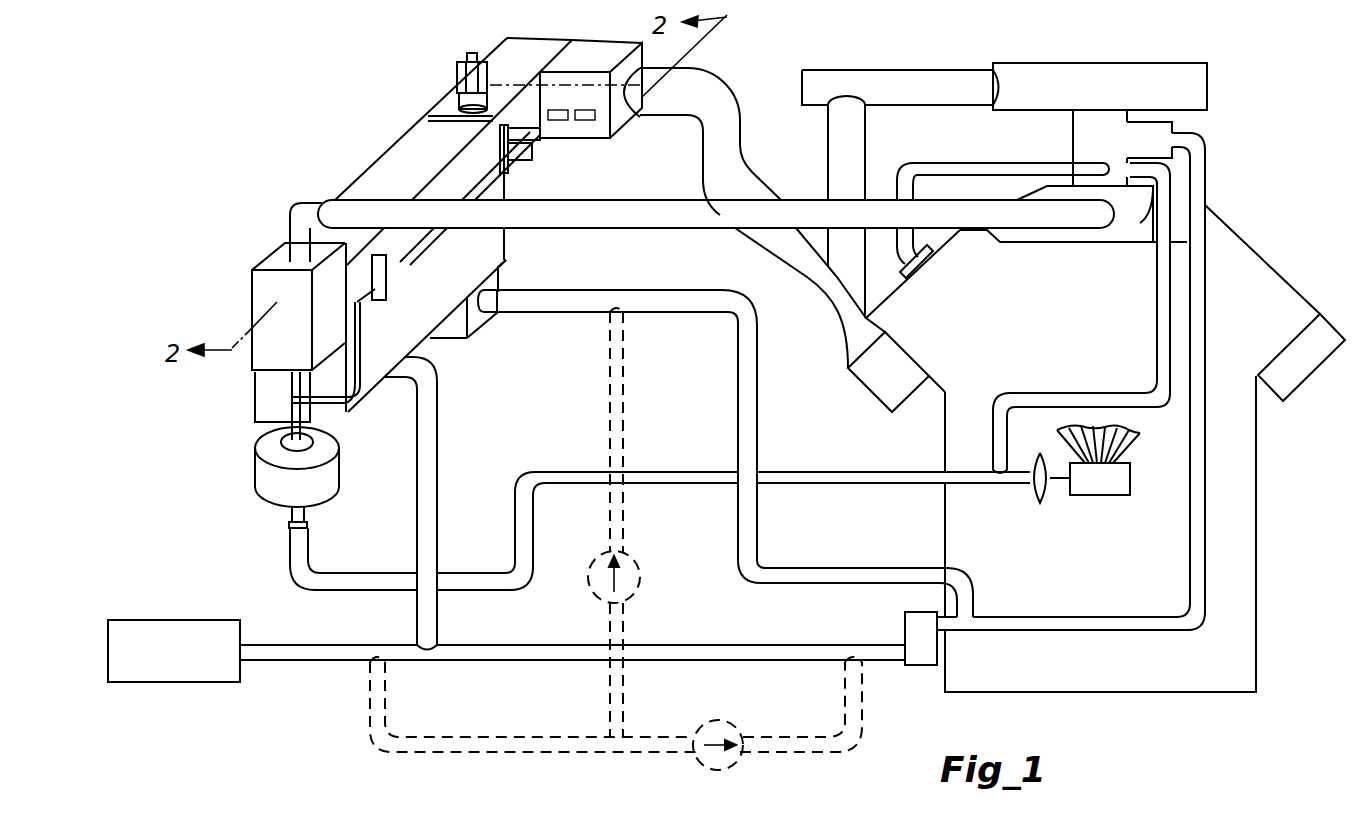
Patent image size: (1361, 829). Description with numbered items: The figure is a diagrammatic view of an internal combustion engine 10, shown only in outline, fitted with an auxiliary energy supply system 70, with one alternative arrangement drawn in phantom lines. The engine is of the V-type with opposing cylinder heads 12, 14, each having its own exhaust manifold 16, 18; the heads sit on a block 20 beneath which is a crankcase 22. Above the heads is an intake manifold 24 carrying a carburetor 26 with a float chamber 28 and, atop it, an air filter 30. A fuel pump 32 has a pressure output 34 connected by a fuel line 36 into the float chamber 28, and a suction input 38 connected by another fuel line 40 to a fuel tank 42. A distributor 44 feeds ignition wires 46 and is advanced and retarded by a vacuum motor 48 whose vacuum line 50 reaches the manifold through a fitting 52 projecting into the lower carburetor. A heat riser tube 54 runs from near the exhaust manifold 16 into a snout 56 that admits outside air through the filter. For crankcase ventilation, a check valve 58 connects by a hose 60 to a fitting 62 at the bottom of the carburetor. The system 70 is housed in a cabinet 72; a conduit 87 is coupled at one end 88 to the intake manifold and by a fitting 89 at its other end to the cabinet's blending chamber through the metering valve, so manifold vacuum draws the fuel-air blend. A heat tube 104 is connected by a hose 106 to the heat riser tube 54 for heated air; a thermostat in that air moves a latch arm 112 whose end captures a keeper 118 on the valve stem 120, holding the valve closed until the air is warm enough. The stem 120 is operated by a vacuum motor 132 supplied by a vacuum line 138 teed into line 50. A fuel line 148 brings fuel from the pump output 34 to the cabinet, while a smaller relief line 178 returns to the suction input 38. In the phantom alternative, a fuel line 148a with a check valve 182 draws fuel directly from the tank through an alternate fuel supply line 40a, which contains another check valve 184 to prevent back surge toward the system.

The internal combustion engine 10 is at (1132, 540).
The cylinder head 12 is at (905, 285).
The cylinder head 14 is at (1298, 285).
The exhaust manifold 16 is at (874, 396).
The exhaust manifold 18 is at (1322, 372).
The block 20 is at (1132, 540).
The crankcase 22 is at (1264, 691).
The intake manifold 24 is at (1210, 204).
The carburetor 26 is at (1073, 133).
The float chamber 28 is at (1178, 135).
The air filter 30 is at (1088, 74).
The fuel pump 32 is at (922, 667).
The pressure output 34 is at (946, 631).
The fuel line 36 is at (1115, 632).
The suction input 38 is at (905, 643).
The fuel line 40 is at (750, 645).
The alternate fuel supply line 40a is at (803, 762).
The fuel tank 42 is at (208, 620).
The distributor 44 is at (1103, 495).
The ignition wires 46 is at (1124, 445).
The vacuum motor 48 is at (1035, 492).
The vacuum line 50 is at (1157, 334).
The fitting 52 is at (1150, 196).
The heat riser tube 54 is at (828, 136).
The snout 56 is at (882, 80).
The check valve 58 is at (906, 265).
The hose 60 is at (985, 171).
The fitting 62 is at (1118, 142).
The auxiliary energy supply system 70 is at (487, 225).
The cabinet 72 is at (396, 170).
The conduit 87 is at (660, 200).
The end 88 is at (1112, 233).
The fitting 89 is at (289, 233).
The heat tube 104 is at (600, 52).
The hose 106 is at (713, 90).
The latch arm 112 is at (426, 244).
The keeper 118 is at (346, 410).
The stem 120 is at (255, 418).
The vacuum motor 132 is at (258, 474).
The vacuum line 138 is at (565, 470).
The fuel line 148 is at (760, 405).
The fuel line 148a is at (630, 410).
The line 178 is at (438, 492).
The check valve 182 is at (645, 570).
The check valve 184 is at (742, 722).